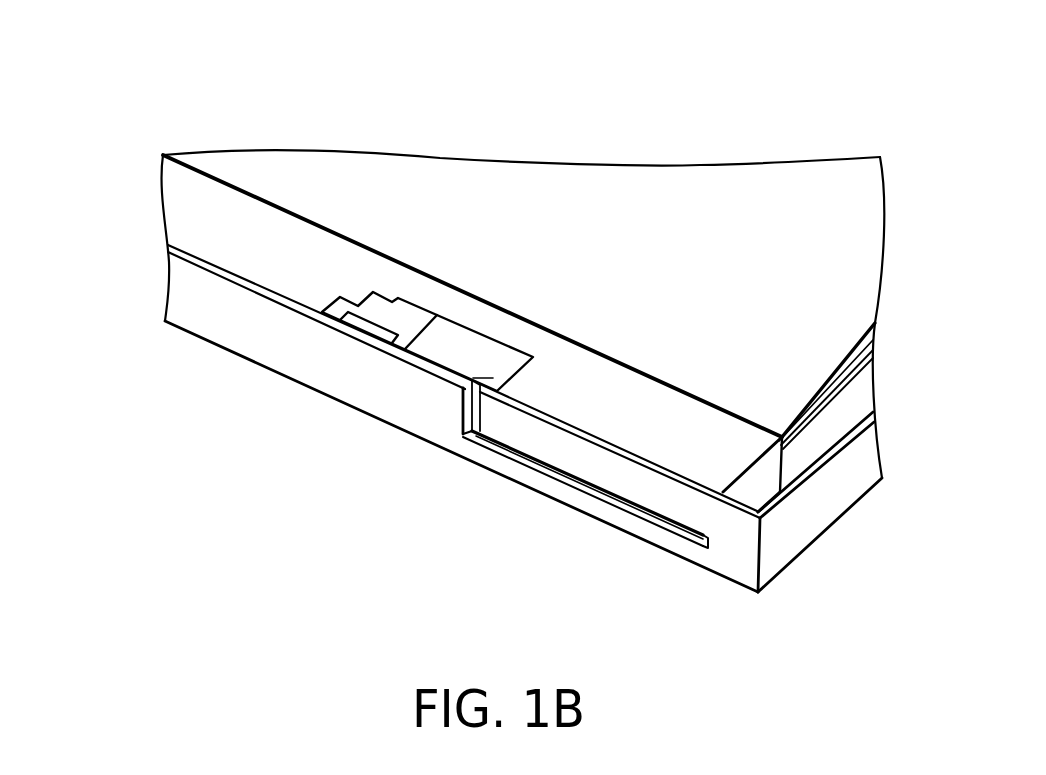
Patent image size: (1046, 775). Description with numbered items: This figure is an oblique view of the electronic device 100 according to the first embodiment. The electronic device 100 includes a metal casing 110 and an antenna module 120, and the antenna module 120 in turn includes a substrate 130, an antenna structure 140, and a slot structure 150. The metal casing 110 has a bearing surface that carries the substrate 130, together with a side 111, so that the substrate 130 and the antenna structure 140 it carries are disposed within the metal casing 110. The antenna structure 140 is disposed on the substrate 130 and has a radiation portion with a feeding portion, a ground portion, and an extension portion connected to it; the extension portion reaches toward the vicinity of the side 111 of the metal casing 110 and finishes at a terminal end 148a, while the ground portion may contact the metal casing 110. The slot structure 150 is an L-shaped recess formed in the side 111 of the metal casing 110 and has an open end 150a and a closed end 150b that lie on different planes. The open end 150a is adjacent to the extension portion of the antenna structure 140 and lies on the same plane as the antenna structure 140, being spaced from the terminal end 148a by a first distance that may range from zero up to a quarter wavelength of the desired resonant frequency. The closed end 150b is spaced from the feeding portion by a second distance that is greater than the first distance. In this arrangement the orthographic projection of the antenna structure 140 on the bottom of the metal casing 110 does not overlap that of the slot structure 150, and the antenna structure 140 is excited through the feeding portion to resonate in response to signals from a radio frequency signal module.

The electronic device 100 is at (908, 592).
The metal casing 110 is at (862, 465).
The side 111 is at (190, 296).
The antenna module 120 is at (127, 22).
The substrate 130 is at (177, 233).
The antenna structure 140 is at (408, 316).
The terminal end of the extension portion 148a is at (492, 375).
The slot structure 150 is at (518, 460).
The open end 150a is at (464, 392).
The closed end 150b is at (697, 540).